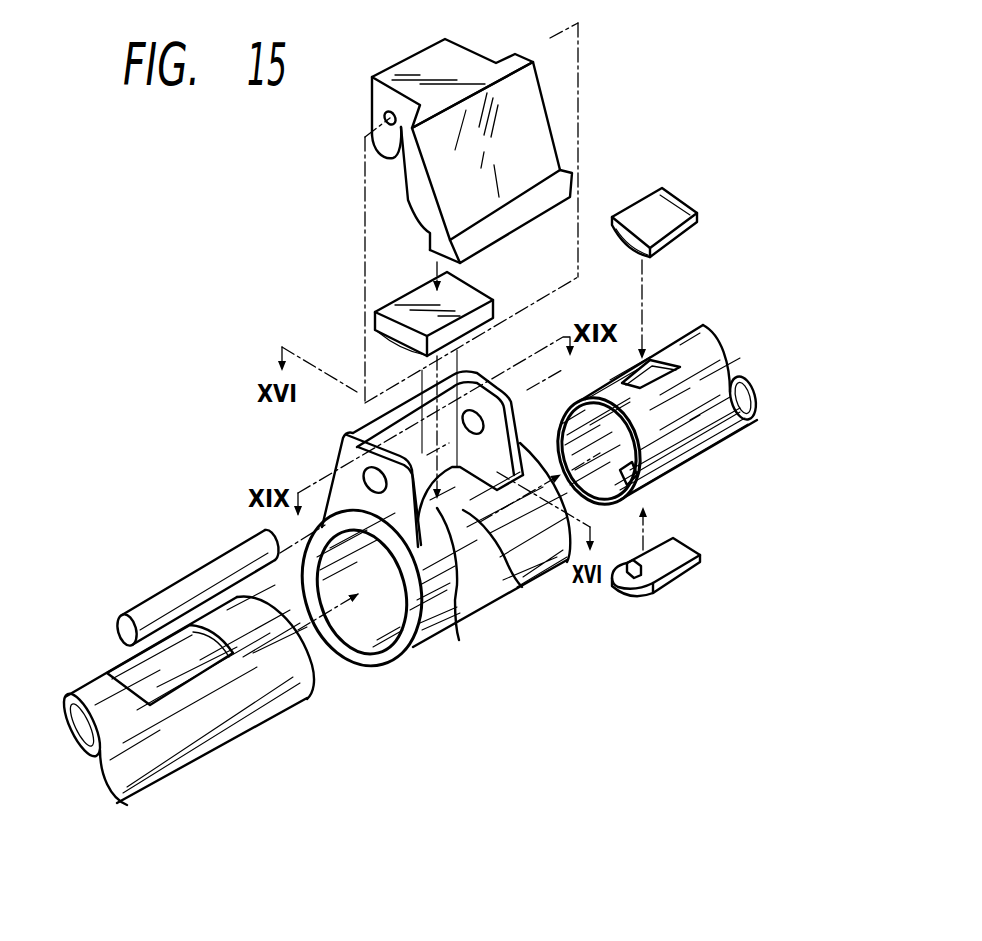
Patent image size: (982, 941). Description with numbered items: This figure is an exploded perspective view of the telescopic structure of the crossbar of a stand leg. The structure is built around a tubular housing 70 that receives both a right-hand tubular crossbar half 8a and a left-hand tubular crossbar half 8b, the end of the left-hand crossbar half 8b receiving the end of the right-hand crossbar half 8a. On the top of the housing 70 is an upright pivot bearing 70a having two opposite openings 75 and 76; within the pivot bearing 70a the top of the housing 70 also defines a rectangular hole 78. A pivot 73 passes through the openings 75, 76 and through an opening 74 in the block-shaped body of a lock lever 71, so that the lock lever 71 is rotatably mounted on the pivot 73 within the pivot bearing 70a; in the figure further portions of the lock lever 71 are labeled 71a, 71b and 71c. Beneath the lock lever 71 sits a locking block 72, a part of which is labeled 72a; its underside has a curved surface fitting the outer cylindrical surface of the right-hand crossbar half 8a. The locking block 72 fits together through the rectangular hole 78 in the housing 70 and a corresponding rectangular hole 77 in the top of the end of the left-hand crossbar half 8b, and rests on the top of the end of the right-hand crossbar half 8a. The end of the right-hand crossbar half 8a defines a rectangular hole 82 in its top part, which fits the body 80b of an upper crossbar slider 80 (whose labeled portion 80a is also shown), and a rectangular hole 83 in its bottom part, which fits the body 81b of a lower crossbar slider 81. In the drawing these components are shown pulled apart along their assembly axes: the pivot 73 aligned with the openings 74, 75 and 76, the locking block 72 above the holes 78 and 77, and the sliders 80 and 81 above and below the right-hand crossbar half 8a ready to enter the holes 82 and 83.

The tubular housing 70 is at (445, 526).
The upright pivot bearing 70a is at (428, 562).
The lock lever 71 is at (472, 131).
The top portion of mirror holder 71a is at (368, 80).
The lug of mirror holder 71b is at (397, 188).
The inclined mirror surface 71c is at (518, 112).
The locking block 72 is at (432, 308).
The curved surface of plate 72a is at (396, 360).
The pivot 73 is at (196, 583).
The opening 74 is at (362, 115).
The opening 75 is at (389, 455).
The opening 76 is at (505, 421).
The rectangular hole 77 is at (215, 698).
The rectangular hole 78 is at (518, 568).
The right-hand tubular crossbar half 8a is at (653, 419).
The left-hand tubular crossbar half 8b is at (185, 718).
The upper crossbar slider 80 is at (659, 204).
The top surface of stopper 80a is at (715, 220).
The body of upper crossbar slider 80b is at (616, 251).
The lower crossbar slider 81 is at (659, 590).
The body of lower crossbar slider 81b is at (694, 547).
The rectangular hole 82 is at (651, 342).
The rectangular hole 83 is at (622, 505).